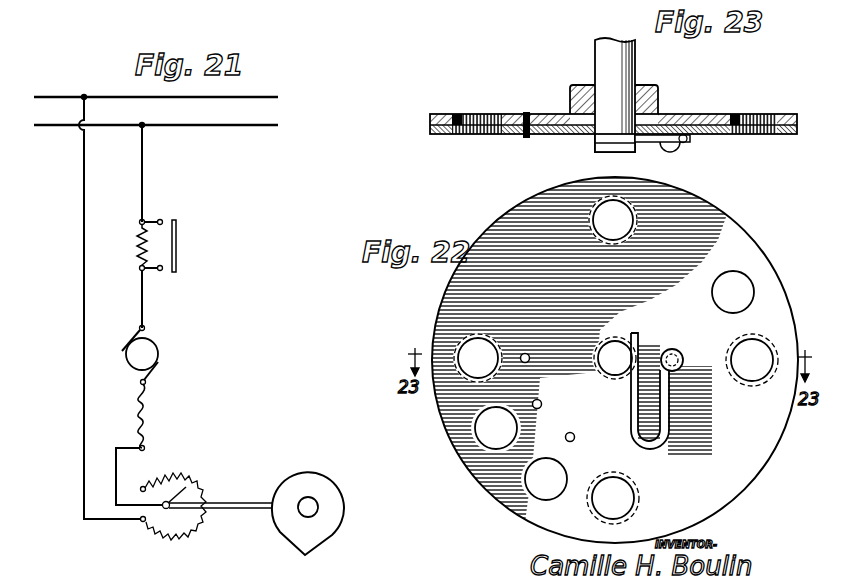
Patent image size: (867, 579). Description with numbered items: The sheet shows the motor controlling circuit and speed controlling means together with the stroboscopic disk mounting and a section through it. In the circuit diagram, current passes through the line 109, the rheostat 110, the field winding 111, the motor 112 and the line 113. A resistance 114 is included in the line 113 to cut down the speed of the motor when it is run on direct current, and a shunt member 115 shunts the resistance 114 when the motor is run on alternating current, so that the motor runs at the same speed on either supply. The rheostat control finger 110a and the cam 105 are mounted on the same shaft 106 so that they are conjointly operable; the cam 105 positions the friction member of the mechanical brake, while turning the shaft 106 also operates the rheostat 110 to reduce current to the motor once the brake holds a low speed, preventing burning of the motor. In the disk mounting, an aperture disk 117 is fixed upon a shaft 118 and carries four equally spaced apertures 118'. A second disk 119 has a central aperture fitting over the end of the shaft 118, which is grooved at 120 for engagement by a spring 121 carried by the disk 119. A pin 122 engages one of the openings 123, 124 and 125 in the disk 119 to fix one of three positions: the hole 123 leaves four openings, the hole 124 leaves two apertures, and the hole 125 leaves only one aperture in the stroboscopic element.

In FIG. 21, the cam 105 is at (340, 511).
In FIG. 21, the shaft 106 is at (238, 509).
In FIG. 21, the line 109 is at (84, 209).
In FIG. 21, the rheostat 110 is at (192, 488).
In FIG. 21, the rheostat control finger 110a is at (182, 490).
In FIG. 21, the field winding 111 is at (148, 418).
In FIG. 21, the motor 112 is at (158, 351).
In FIG. 21, the line 113 is at (144, 186).
In FIG. 21, the resistance 114 is at (137, 254).
In FIG. 21, the shunt member 115 is at (180, 232).
In FIG. 23, the aperture disk 117 is at (710, 115).
In FIG. 23, the shaft 118 is at (638, 95).
In FIG. 22, the shaft 118 is at (623, 340).
In FIG. 23, the apertures 118' is at (632, 107).
In FIG. 22, the apertures 118' is at (632, 347).
In FIG. 23, the second disk 119 is at (785, 136).
In FIG. 22, the second disk 119 is at (736, 226).
In FIG. 23, the groove 120 is at (597, 135).
In FIG. 23, the spring 121 is at (641, 143).
In FIG. 22, the spring 121 is at (662, 416).
In FIG. 23, the pin 122 is at (525, 138).
In FIG. 22, the pin 122 is at (530, 357).
In FIG. 22, the opening 123 is at (529, 362).
In FIG. 22, the opening 124 is at (542, 404).
In FIG. 22, the opening 125 is at (575, 437).